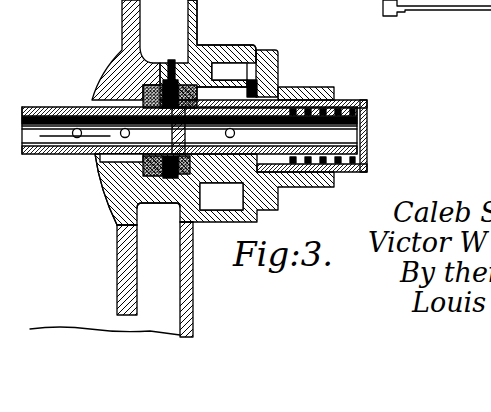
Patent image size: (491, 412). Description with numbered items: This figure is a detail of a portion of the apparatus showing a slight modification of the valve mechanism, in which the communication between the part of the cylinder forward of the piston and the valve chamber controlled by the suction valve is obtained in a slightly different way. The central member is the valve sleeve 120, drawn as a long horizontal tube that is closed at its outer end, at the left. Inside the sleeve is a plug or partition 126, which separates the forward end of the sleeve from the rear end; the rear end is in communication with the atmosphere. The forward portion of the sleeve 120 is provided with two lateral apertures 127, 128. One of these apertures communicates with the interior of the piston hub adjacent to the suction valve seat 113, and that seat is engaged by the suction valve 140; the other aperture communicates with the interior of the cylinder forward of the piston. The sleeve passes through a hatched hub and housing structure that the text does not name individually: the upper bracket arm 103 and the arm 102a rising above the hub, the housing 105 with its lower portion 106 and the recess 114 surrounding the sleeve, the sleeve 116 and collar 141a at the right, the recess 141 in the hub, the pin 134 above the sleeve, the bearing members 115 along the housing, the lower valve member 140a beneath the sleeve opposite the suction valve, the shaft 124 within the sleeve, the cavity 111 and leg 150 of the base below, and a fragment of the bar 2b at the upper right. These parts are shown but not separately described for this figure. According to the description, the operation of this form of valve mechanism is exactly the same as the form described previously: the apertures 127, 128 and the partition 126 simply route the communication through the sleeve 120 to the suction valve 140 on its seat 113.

The arm of bracket 102a is at (198, 20).
The arm of bracket 103 is at (124, 40).
The housing 105 is at (352, 100).
The housing bottom portion 106 is at (283, 188).
The cavity of base 111 is at (169, 190).
The suction valve seat 113 is at (118, 205).
The housing recess 114 is at (222, 219).
The bearing rollers 115 is at (356, 110).
The sleeve 116 is at (298, 93).
The valve sleeve 120 is at (40, 107).
The shaft 124 is at (236, 134).
The plug or partition 126 is at (194, 130).
The lateral aperture 127 is at (79, 139).
The lateral aperture 128 is at (76, 139).
The pin 134 is at (171, 60).
The suction valve 140 is at (146, 96).
The lower bearing ring 140a is at (150, 170).
The recess 141 is at (229, 71).
The collar 141a is at (224, 84).
The leg 150 is at (135, 279).
The bar 2b is at (460, 6).